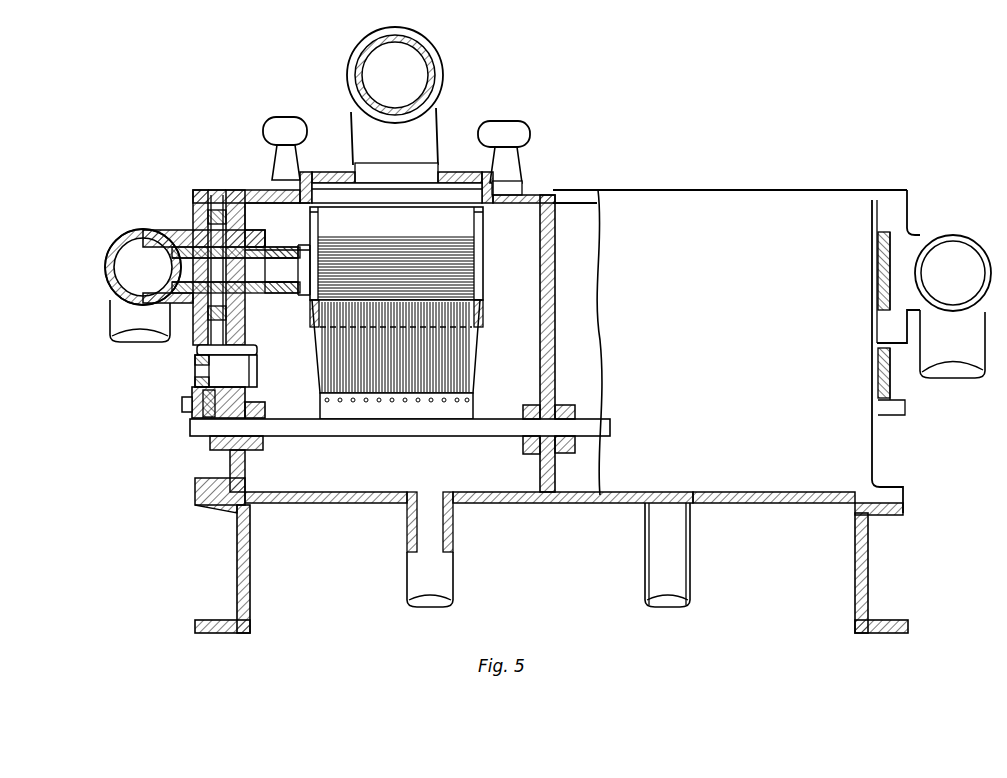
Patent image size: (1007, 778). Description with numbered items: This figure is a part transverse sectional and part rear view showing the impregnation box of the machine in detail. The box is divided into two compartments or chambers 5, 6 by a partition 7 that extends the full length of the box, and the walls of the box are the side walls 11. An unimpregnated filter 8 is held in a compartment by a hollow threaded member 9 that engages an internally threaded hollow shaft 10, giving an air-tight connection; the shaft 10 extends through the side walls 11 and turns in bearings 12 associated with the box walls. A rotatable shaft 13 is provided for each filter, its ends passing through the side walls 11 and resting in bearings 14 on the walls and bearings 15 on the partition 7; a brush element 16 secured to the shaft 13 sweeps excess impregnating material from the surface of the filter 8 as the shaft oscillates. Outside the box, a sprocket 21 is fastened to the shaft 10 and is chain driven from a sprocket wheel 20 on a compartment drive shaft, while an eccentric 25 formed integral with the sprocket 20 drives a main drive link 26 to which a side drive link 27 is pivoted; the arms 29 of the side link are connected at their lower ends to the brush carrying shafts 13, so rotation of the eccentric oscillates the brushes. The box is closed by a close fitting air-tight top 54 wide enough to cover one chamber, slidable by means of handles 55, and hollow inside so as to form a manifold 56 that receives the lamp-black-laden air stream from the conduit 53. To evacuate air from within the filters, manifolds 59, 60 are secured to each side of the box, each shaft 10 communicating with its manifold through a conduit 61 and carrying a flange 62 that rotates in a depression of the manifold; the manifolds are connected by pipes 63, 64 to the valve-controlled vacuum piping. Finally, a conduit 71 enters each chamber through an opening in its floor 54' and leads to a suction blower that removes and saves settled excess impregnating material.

The compartment 5 is at (525, 215).
The compartment 6 is at (577, 210).
The partition 7 is at (555, 263).
The unimpregnated filters 8 is at (483, 263).
The hollow threaded members 9 is at (284, 288).
The hollow shafts 10 is at (270, 300).
The side walls 11 is at (266, 470).
The bearings 12 is at (264, 239).
The rotatable shafts 13 is at (397, 430).
The bearings 14 is at (265, 411).
The bearings 15 is at (568, 406).
The brush element 16 is at (466, 362).
The sprocket wheel 20 is at (197, 349).
The sprocket 21 is at (215, 195).
The eccentric 25 is at (197, 373).
The main drive link 26 is at (196, 421).
The side drive link 27 is at (208, 420).
The arms 29 is at (218, 444).
The conduit 53 is at (432, 56).
The air tight top 54 is at (343, 146).
The floor 54' is at (551, 555).
The handles 55 is at (291, 118).
The manifold 56 is at (466, 190).
The manifold 59 is at (108, 268).
The manifold 60 is at (977, 313).
The conduits 61 is at (187, 273).
The flange 62 is at (200, 237).
The pipe 63 is at (122, 330).
The pipe 64 is at (968, 355).
The conduit 71 is at (440, 573).